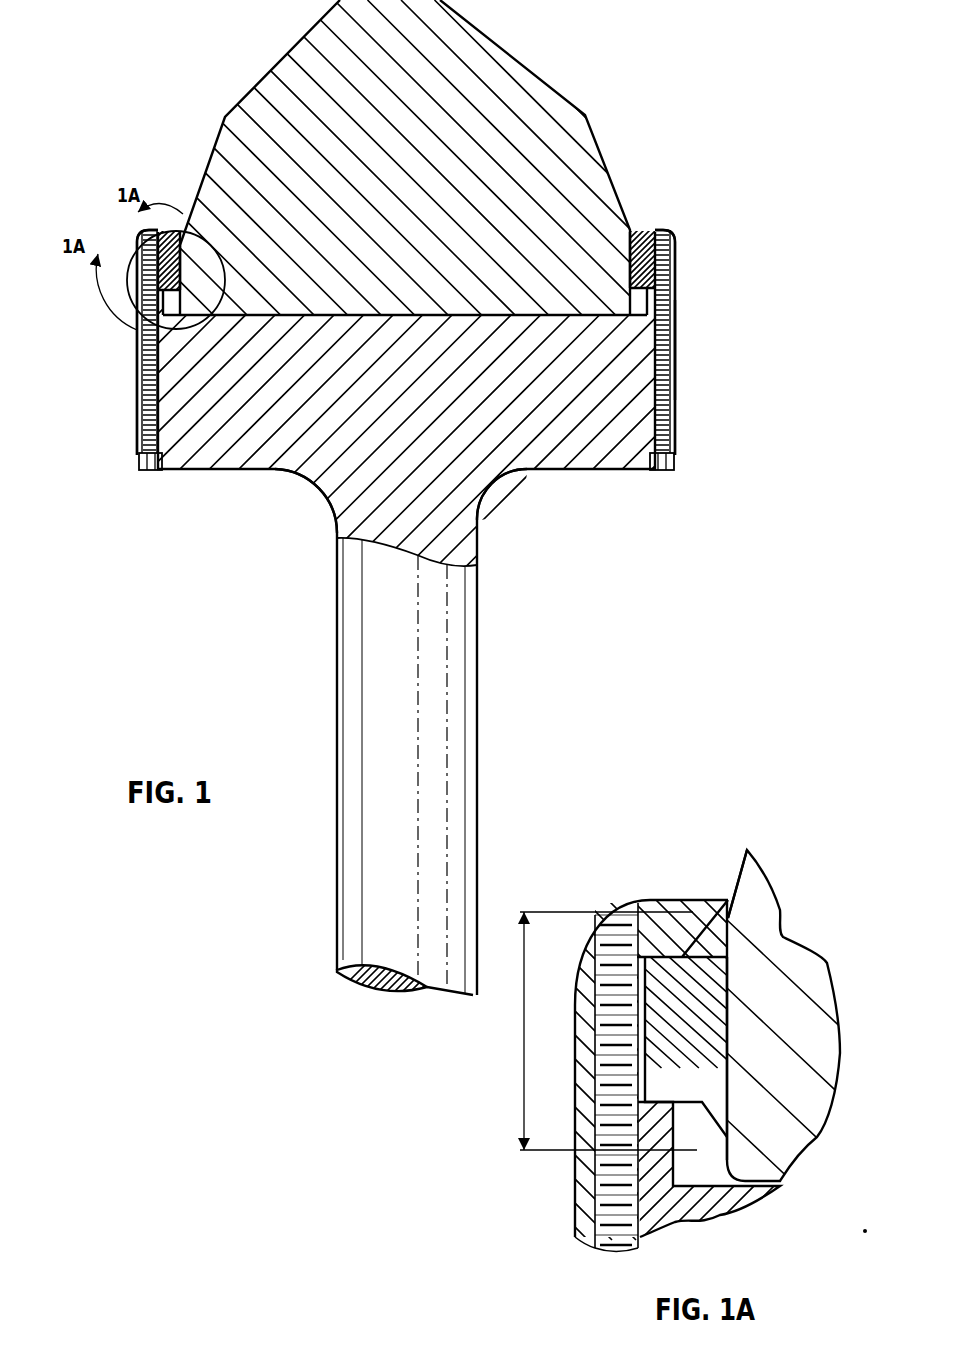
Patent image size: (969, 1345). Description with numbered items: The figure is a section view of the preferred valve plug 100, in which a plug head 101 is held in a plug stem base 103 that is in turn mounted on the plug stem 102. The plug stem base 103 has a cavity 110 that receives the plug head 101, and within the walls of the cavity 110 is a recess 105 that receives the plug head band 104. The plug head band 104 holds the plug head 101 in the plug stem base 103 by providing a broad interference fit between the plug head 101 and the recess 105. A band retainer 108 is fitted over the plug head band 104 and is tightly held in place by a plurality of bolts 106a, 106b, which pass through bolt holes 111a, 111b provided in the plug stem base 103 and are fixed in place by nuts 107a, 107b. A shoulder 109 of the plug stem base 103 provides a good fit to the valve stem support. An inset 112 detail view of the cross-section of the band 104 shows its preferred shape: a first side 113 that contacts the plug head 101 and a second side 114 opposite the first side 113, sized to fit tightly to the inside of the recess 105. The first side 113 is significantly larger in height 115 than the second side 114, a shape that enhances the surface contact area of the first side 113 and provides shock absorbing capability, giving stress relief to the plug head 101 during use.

In FIG. 1, the valve plug 100 is at (712, 372).
In FIG. 1, the plug head 101 is at (580, 140).
In FIG. 1A, the plug head 101 is at (820, 975).
In FIG. 1, the plug stem 102 is at (450, 738).
In FIG. 1, the plug stem base 103 is at (590, 469).
In FIG. 1, the plug head band 104 is at (650, 232).
In FIG. 1A, the plug head band 104 is at (660, 956).
In FIG. 1, the recess 105 is at (675, 262).
In FIG. 1A, the recess 105 is at (661, 955).
In FIG. 1, the bolt 106a is at (673, 323).
In FIG. 1, the bolt 106b is at (137, 342).
In FIG. 1A, the bolt 106b is at (595, 1195).
In FIG. 1, the nut 107a is at (672, 468).
In FIG. 1, the nut 107b is at (137, 462).
In FIG. 1, the band retainer 108 is at (645, 230).
In FIG. 1, the shoulder 109 is at (500, 488).
In FIG. 1, the cavity 110 is at (640, 302).
In FIG. 1, the bolt hole 111a is at (675, 393).
In FIG. 1, the bolt hole 111b is at (137, 380).
In FIG. 1A, the inset detail view 112 is at (797, 928).
In FIG. 1A, the first side 113 is at (727, 1053).
In FIG. 1A, the second side 114 is at (643, 987).
In FIG. 1A, the height 115 is at (520, 1040).